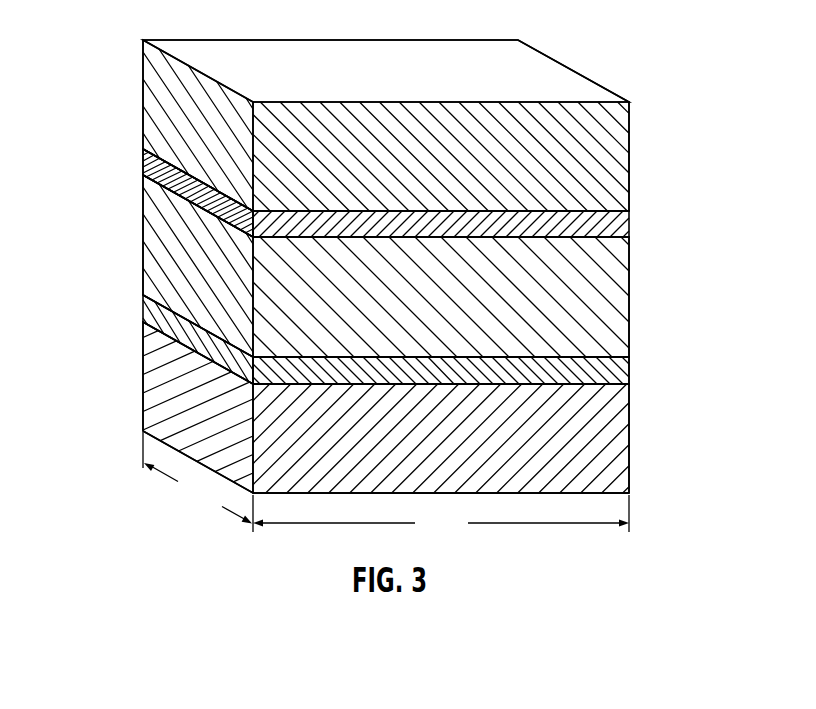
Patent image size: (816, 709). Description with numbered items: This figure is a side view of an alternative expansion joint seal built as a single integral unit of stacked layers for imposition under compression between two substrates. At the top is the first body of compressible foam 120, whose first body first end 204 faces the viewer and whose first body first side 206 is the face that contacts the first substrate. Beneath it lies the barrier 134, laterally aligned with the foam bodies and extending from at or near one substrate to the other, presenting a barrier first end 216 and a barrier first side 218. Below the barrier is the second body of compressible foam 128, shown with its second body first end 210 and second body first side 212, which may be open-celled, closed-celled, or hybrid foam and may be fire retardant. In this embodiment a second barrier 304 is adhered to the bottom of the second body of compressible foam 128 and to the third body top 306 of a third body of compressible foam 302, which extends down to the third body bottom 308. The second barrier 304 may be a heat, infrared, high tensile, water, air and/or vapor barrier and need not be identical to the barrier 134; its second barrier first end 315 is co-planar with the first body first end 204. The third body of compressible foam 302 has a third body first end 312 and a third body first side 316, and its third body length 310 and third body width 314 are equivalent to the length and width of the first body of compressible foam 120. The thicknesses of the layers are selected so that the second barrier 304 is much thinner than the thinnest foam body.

The first body of compressible foam 120 is at (163, 90).
The barrier 134 is at (160, 165).
The barrier first end 216 is at (148, 172).
The second body of compressible foam 128 is at (165, 262).
The second barrier 304 is at (160, 323).
The third body of compressible foam 302 is at (168, 393).
The first body first end 204 is at (202, 146).
The first body first side 206 is at (553, 166).
The barrier first side 218 is at (613, 225).
The second body first end 210 is at (202, 299).
The second body first side 212 is at (557, 309).
The second barrier first end 315 is at (613, 370).
The third body top 306 is at (615, 380).
The third body first end 312 is at (202, 439).
The third body first side 316 is at (555, 450).
The third body bottom 308 is at (612, 493).
The third body width 314 is at (198, 482).
The third body length 310 is at (441, 517).